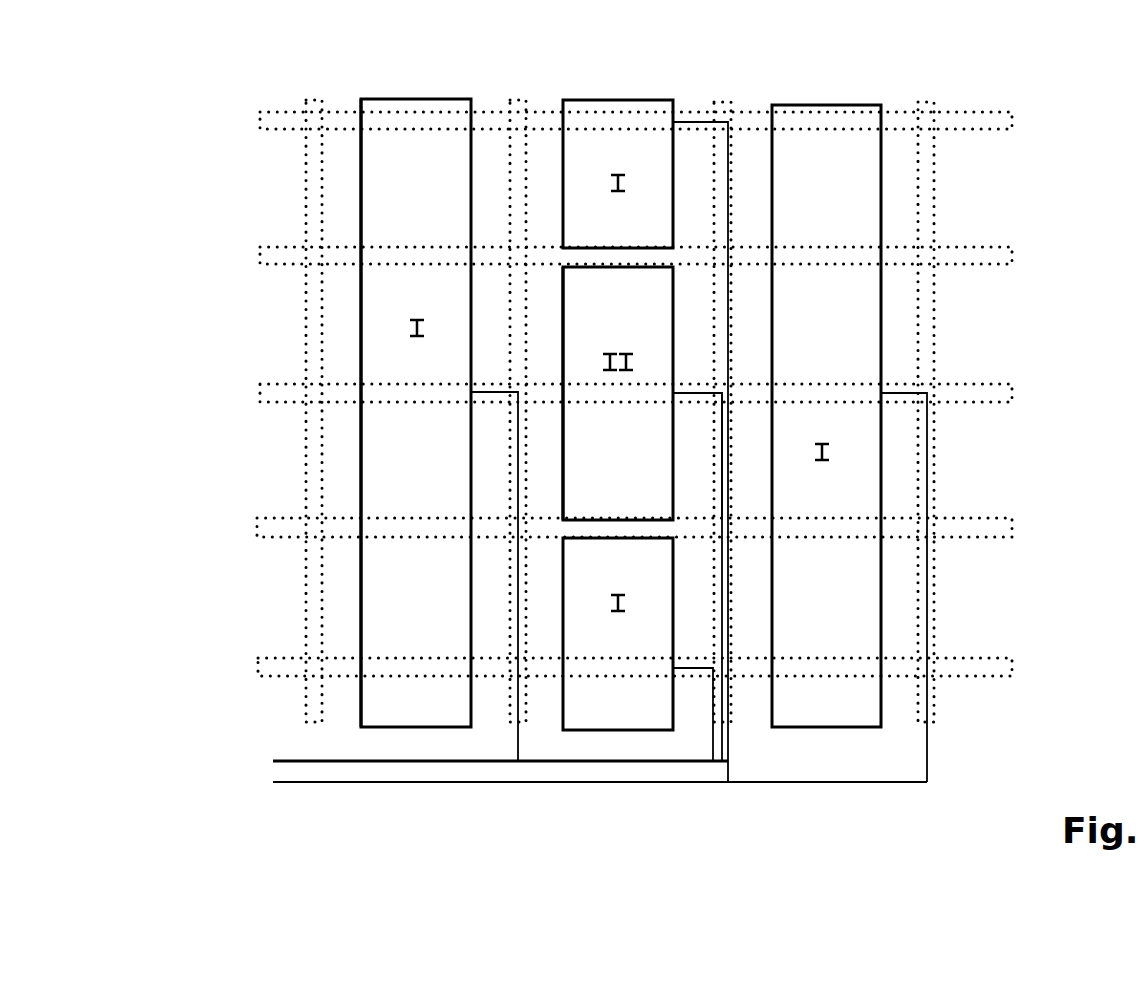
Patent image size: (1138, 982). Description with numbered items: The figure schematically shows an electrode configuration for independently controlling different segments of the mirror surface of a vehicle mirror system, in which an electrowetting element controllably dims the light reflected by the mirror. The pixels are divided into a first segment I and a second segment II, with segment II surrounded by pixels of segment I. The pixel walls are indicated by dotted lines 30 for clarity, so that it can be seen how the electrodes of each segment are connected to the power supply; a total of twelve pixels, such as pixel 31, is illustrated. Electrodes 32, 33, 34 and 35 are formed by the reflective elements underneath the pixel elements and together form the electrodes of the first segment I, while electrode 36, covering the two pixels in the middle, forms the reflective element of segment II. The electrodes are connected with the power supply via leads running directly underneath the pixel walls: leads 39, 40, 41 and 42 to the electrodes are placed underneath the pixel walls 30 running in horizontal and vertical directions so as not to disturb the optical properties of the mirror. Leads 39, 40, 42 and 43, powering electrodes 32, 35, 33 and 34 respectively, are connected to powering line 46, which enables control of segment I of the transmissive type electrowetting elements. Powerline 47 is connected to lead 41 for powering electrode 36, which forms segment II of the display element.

The dotted lines (pixel walls) 30 is at (276, 111).
The pixel 31 is at (340, 146).
The electrode 32 is at (360, 306).
The electrode 33 is at (637, 101).
The electrode 34 is at (882, 193).
The electrode 35 is at (610, 733).
The electrode 36 is at (562, 328).
The lead 39 is at (518, 703).
The lead 40 is at (713, 735).
The lead 41 is at (720, 443).
The lead 42 is at (728, 740).
The lead 43 is at (927, 746).
The powering line 46 is at (297, 783).
The powerline 47 is at (290, 761).